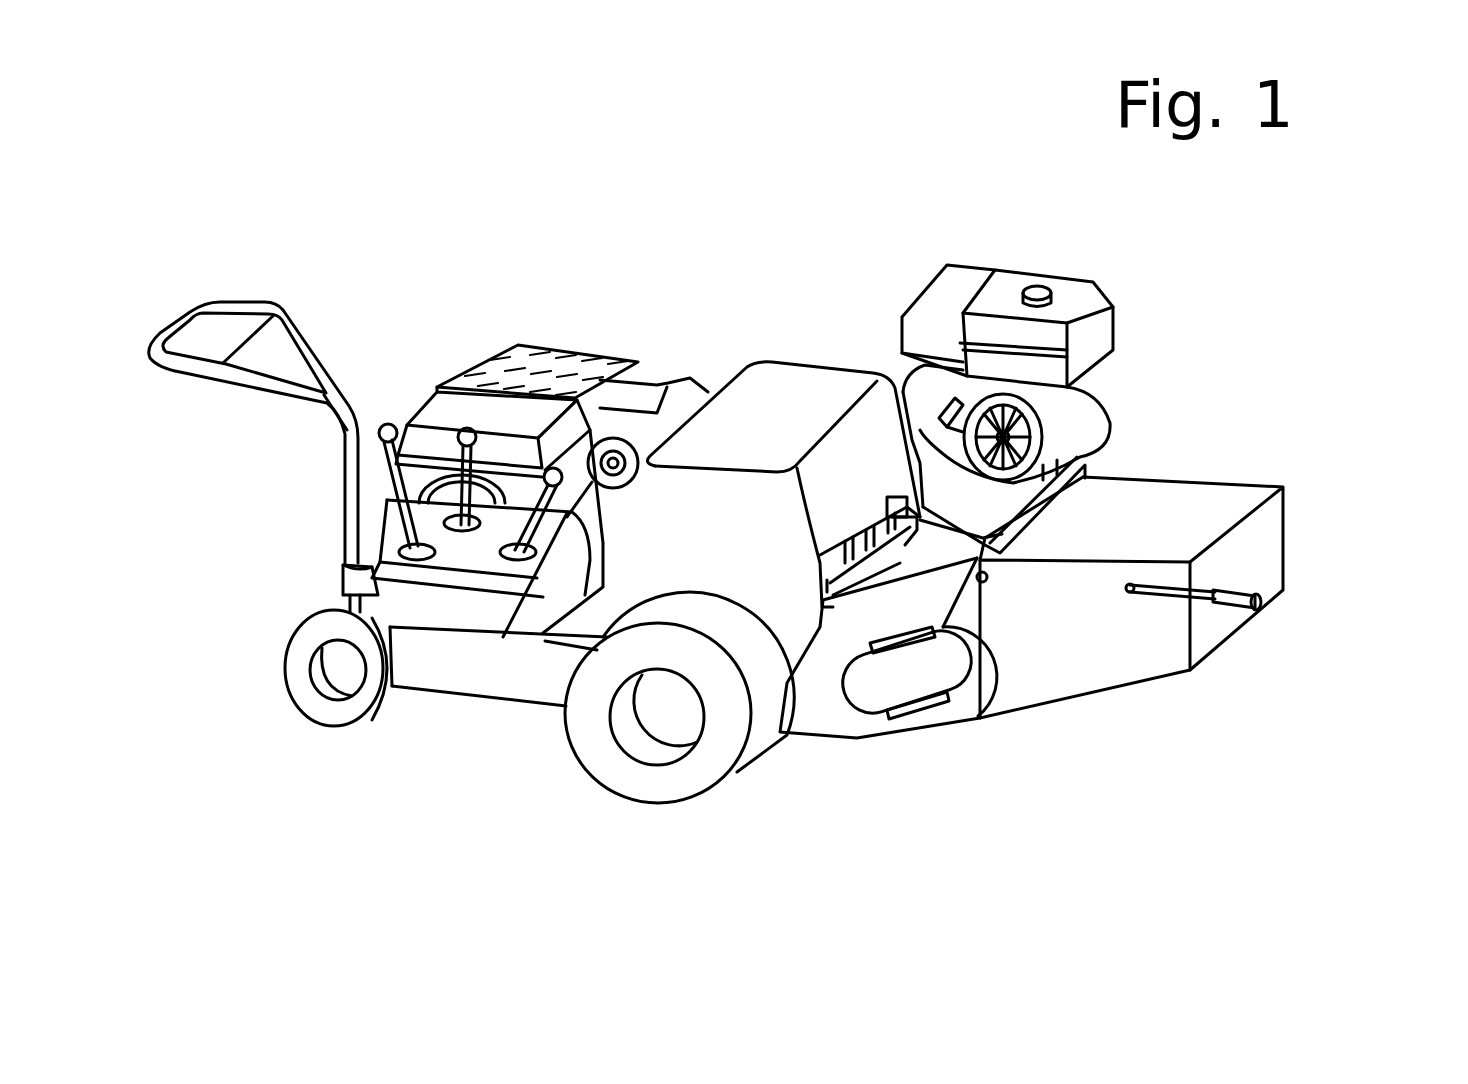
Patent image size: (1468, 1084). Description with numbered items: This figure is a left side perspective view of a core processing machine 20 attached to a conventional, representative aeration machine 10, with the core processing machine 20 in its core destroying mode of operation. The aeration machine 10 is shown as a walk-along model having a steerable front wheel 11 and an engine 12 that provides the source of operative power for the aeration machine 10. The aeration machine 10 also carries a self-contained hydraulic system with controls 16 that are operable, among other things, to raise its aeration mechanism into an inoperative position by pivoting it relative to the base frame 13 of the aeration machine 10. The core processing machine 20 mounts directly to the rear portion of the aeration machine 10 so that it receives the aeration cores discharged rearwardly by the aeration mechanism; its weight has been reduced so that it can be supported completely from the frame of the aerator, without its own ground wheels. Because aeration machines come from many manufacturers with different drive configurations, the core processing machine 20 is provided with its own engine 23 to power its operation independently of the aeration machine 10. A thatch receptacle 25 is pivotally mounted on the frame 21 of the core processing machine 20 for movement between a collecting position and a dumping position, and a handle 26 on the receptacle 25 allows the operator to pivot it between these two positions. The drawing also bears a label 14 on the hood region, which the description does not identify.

The aeration machine 10 is at (507, 238).
The steerable front wheel 11 is at (303, 710).
The engine 12 is at (588, 350).
The base frame 13 is at (468, 690).
The engine hood 14 is at (866, 552).
The controls 16 is at (372, 477).
The core processing machine 20 is at (1258, 335).
The frame 21 is at (855, 740).
The engine 23 is at (1108, 347).
The thatch receptacle 25 is at (1290, 525).
The handle 26 is at (1257, 612).